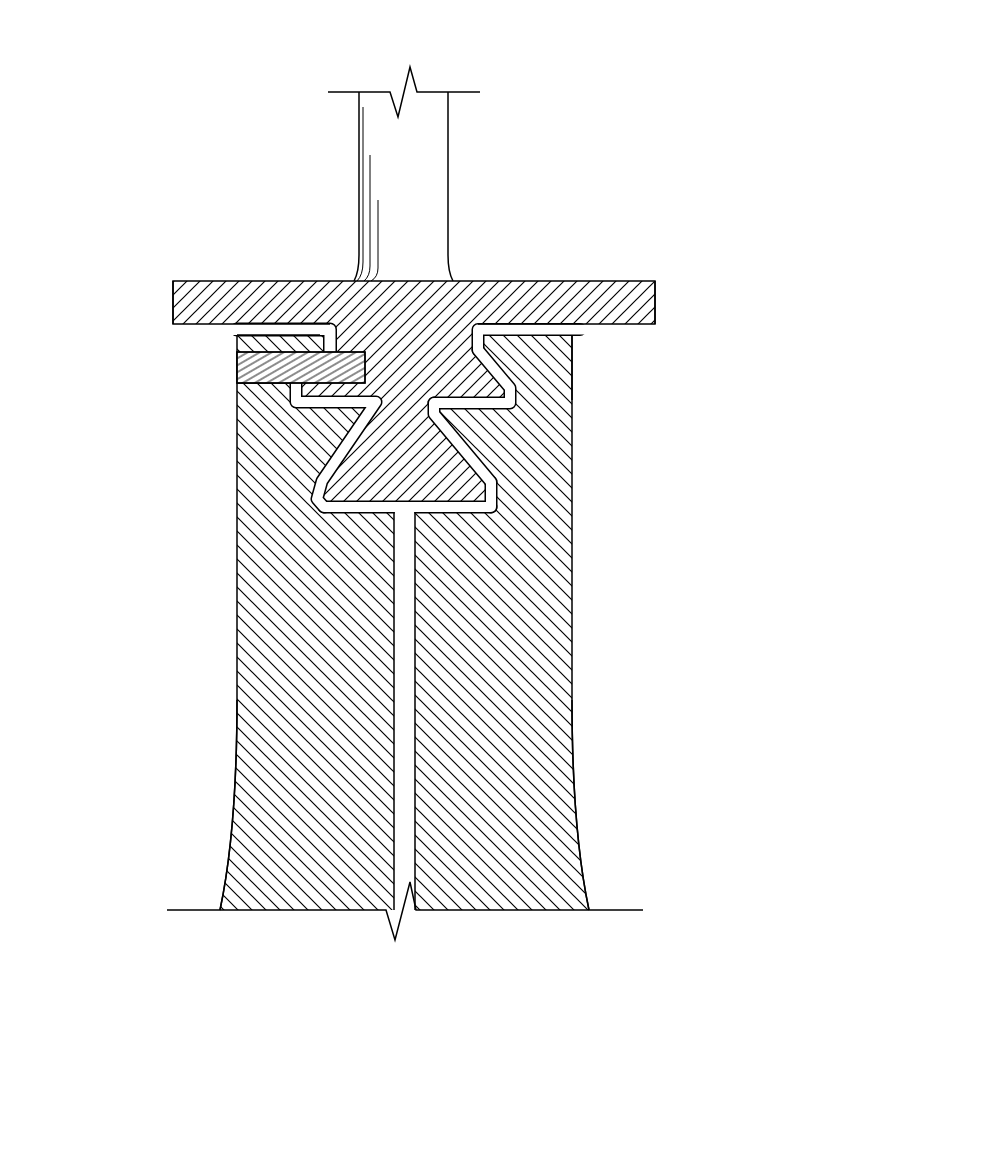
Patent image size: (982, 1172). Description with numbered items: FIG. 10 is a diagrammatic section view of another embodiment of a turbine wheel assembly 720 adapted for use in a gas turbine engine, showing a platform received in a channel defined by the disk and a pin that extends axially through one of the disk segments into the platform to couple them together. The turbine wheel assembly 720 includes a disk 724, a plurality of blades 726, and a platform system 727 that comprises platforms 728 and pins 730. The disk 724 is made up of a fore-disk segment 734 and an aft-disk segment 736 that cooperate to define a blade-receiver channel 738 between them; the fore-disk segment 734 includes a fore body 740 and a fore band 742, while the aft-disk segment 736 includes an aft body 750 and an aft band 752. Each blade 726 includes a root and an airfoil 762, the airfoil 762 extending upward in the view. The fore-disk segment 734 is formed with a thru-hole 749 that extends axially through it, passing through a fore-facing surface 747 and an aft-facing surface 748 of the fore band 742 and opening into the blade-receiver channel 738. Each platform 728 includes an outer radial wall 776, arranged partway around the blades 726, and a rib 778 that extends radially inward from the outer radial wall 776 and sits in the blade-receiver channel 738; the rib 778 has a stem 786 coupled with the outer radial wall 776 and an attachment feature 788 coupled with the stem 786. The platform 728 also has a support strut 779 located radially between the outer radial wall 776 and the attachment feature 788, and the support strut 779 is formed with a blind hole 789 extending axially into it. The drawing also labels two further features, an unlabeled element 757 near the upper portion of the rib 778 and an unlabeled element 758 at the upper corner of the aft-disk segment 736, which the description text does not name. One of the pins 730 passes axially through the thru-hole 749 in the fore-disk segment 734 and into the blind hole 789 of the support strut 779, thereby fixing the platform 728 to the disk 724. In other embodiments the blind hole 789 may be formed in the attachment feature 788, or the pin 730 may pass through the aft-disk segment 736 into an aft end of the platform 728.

The turbine wheel assembly 720 is at (678, 107).
The disk 724 is at (185, 848).
The blade 726 is at (458, 126).
The platform system 727 is at (140, 295).
The platform 728 is at (214, 270).
The pin 730 is at (225, 369).
The fore-disk segment 734 is at (205, 798).
The aft-disk segment 736 is at (595, 712).
The blade-receiver channel 738 is at (447, 516).
The fore body 740 is at (222, 717).
The fore band 742 is at (222, 574).
The fore-facing surface 747 is at (237, 341).
The aft-facing surface 748 is at (342, 352).
The thru-hole 749 is at (265, 387).
The aft body 750 is at (595, 668).
The aft band 752 is at (590, 467).
The insert hook 757 is at (491, 356).
The body corner 758 is at (572, 345).
The airfoil 762 is at (428, 184).
The outer radial wall 776 is at (680, 296).
The rib 778 is at (465, 440).
The support strut 779 is at (512, 365).
The stem 786 is at (458, 305).
The attachment feature 788 is at (480, 480).
The blind hole 789 is at (347, 387).